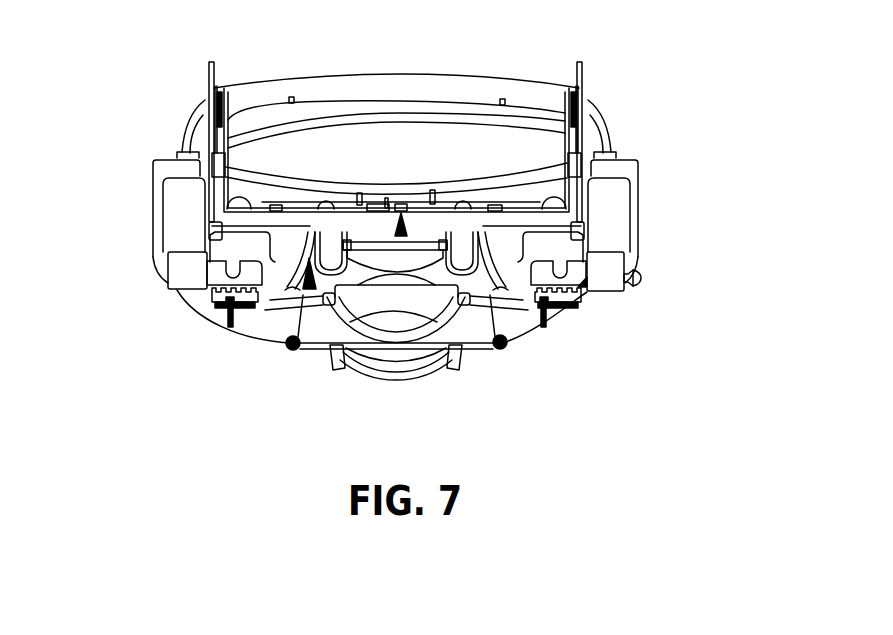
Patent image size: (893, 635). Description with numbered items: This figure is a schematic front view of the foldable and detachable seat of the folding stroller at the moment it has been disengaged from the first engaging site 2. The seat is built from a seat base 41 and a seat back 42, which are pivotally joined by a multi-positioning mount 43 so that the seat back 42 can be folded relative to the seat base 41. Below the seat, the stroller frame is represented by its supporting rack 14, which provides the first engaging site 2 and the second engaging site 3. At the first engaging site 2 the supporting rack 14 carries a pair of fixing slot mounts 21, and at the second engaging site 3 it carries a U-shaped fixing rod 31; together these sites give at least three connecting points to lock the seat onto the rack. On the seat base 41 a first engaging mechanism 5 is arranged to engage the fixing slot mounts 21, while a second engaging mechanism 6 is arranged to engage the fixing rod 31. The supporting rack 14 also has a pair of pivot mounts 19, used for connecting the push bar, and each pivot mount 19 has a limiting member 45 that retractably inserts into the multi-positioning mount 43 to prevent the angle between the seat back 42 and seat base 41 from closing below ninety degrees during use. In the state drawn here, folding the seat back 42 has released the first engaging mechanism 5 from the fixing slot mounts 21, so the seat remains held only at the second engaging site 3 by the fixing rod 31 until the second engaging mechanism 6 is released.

The seat base 41 is at (396, 84).
The seat back 42 is at (333, 188).
The multi-positioning mount 43 is at (204, 112).
The pivot mount 19 is at (182, 196).
The first engaging mechanism 5 is at (258, 236).
The U-shaped fixing rod 31 is at (496, 248).
The second engaging mechanism 6 is at (402, 210).
The second engaging site 3 is at (314, 296).
The supporting rack 14 is at (610, 297).
The first engaging site 2 is at (231, 300).
The fixing slot mount 21 is at (208, 294).
The limiting member 45 is at (641, 279).